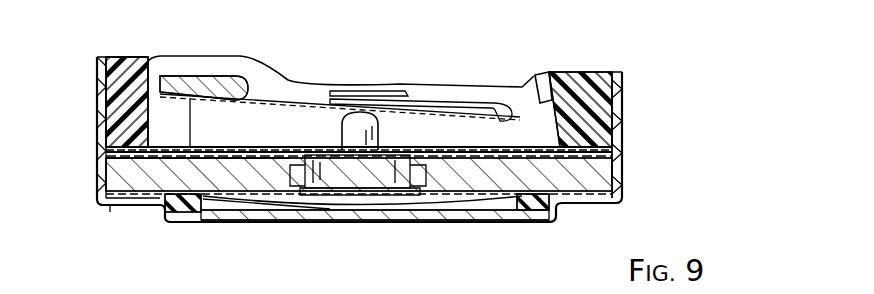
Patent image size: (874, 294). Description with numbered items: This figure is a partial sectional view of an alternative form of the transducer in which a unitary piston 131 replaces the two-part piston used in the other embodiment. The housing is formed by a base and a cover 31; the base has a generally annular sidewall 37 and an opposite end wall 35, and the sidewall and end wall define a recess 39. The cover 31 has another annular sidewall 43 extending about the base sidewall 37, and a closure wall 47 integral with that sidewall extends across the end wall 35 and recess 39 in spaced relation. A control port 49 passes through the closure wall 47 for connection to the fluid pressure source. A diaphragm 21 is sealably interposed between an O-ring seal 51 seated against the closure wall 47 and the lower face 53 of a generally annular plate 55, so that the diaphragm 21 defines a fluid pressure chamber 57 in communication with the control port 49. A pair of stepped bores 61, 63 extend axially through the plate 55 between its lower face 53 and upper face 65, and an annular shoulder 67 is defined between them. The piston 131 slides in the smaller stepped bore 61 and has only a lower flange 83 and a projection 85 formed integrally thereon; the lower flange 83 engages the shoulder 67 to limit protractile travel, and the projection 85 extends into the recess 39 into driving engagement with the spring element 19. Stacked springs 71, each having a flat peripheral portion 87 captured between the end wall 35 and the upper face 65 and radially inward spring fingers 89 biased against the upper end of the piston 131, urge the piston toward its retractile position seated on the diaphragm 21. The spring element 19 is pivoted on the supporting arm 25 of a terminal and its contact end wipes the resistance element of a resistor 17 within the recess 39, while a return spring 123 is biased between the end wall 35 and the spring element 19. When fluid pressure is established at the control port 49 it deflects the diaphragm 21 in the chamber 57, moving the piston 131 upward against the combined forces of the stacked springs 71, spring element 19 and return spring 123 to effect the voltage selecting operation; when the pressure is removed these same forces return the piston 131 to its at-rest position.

The resistor 17 is at (540, 78).
The spring element 19 is at (238, 108).
The diaphragm 21 is at (298, 204).
The supporting arm 25 is at (240, 84).
The cover 31 is at (625, 72).
The opposite end wall 35 is at (150, 132).
The sidewall 37 is at (112, 76).
The recess 39 is at (152, 66).
The sidewall 43 is at (612, 70).
The closure wall 47 is at (588, 204).
The control port 49 is at (268, 214).
The O-ring seal 51 is at (190, 214).
The lower face 53 is at (116, 207).
The plate 55 is at (600, 170).
The chamber 57 is at (492, 212).
The smaller stepped bore 61 is at (296, 170).
The stepped bore 63 is at (270, 172).
The upper face 65 is at (120, 170).
The shoulder 67 is at (425, 160).
The stacked springs 71 is at (610, 145).
The lower flange 83 is at (392, 206).
The projection 85 is at (342, 132).
The peripheral portion 87 is at (615, 153).
The spring fingers 89 is at (430, 150).
The return spring 123 is at (348, 92).
The piston 131 is at (378, 184).